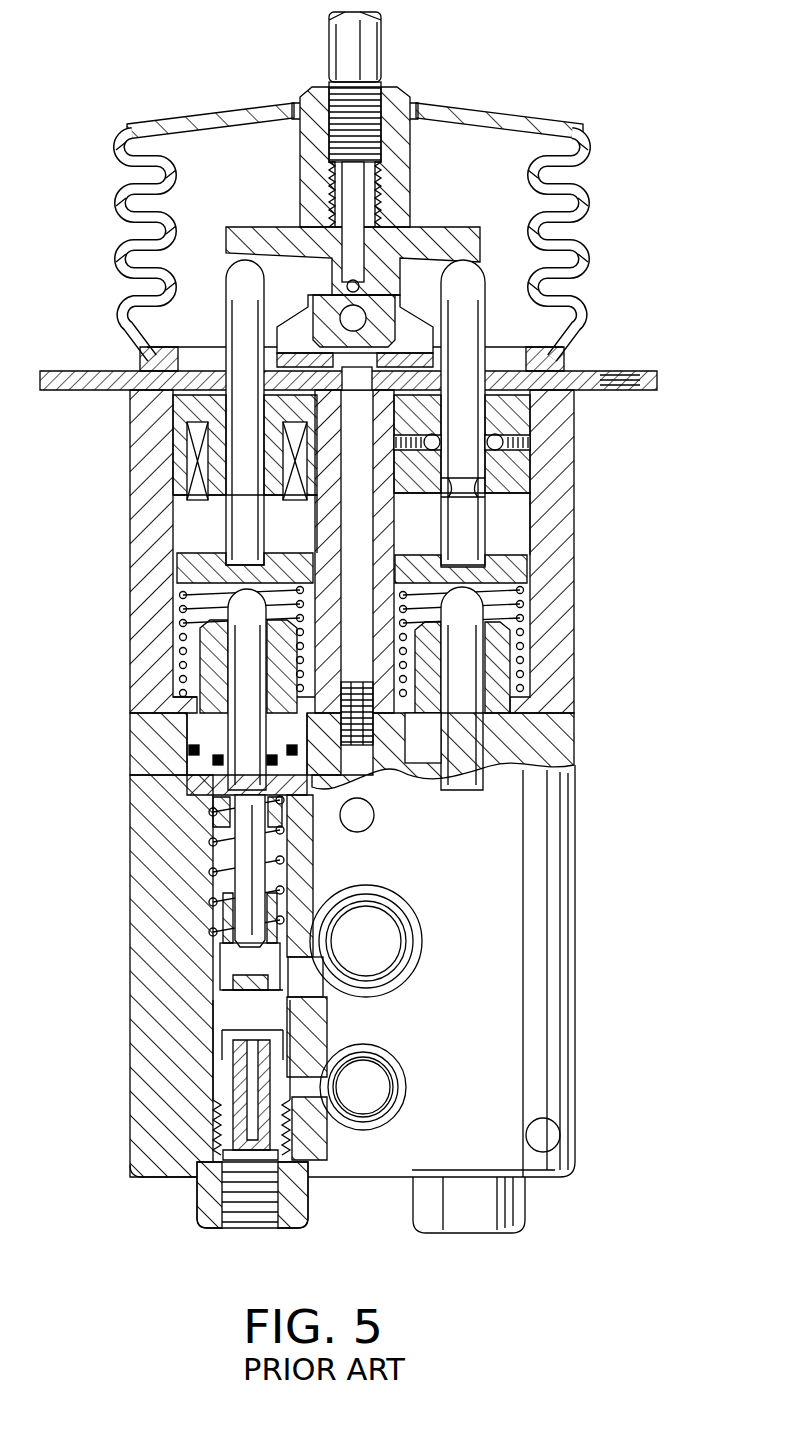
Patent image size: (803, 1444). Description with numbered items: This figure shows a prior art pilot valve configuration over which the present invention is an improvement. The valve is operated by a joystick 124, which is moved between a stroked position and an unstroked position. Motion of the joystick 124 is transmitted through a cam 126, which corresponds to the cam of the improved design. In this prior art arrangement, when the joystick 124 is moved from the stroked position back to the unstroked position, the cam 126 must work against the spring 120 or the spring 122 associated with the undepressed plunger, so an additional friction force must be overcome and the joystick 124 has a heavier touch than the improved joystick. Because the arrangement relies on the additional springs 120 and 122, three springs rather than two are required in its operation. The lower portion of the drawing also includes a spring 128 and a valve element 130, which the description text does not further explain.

The spring 120 is at (517, 598).
The spring 122 is at (185, 598).
The joystick 124 is at (330, 52).
The cam 126 is at (430, 248).
The valve spring 128 is at (215, 840).
The valve plunger 130 is at (218, 960).